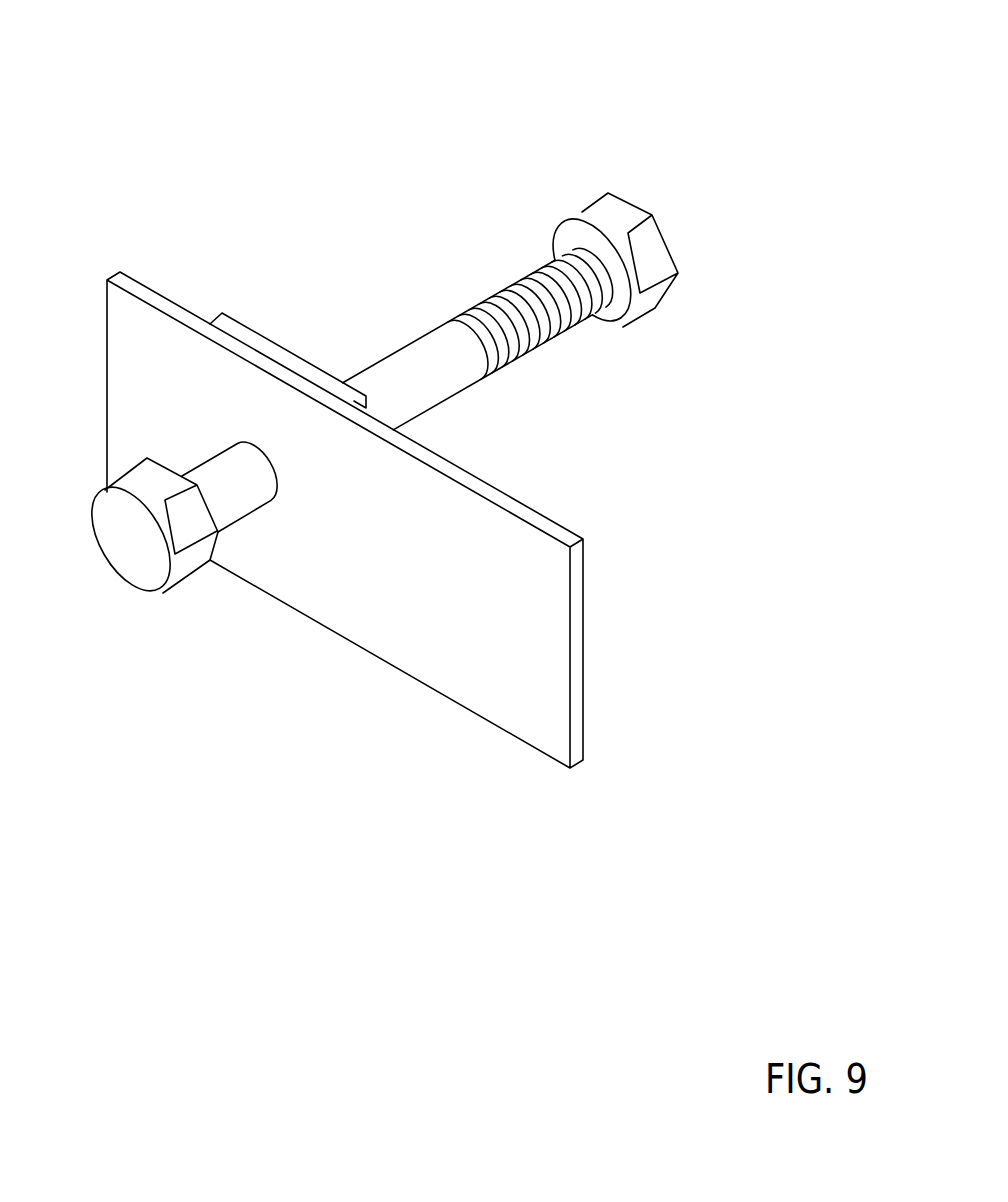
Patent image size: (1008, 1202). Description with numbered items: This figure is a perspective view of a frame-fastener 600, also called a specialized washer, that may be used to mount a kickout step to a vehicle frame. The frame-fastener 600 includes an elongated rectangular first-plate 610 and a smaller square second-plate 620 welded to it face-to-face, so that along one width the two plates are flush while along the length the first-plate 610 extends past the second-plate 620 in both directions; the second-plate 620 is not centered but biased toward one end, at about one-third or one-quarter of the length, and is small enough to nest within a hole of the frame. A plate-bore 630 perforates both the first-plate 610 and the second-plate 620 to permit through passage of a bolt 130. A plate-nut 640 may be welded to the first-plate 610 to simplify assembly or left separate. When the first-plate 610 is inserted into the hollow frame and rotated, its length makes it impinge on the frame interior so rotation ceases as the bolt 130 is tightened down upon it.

The frame-fastener 600 is at (755, 790).
The first-plate 610 is at (472, 650).
The second-plate 620 is at (263, 333).
The plate-bore 630 is at (268, 505).
The plate-nut 640 is at (636, 193).
The bolt 130 is at (123, 580).